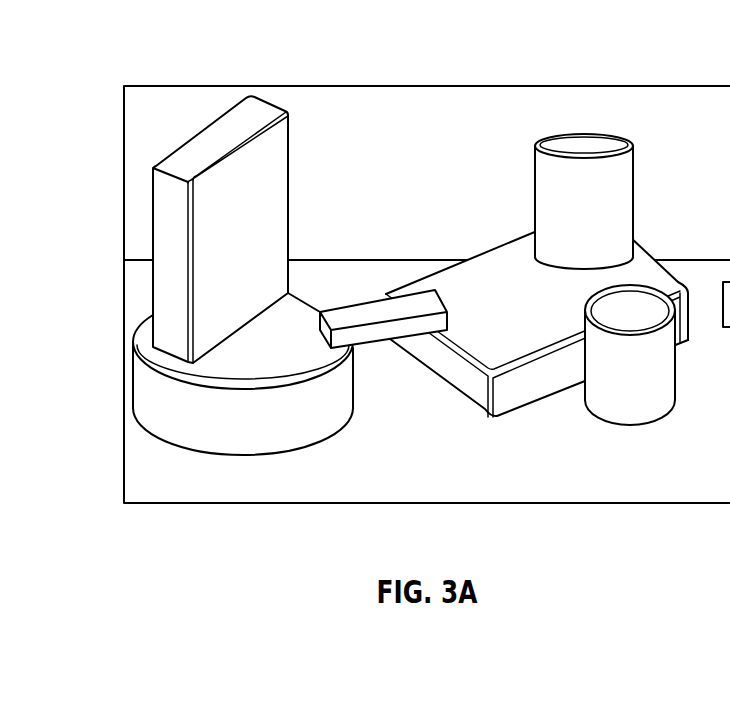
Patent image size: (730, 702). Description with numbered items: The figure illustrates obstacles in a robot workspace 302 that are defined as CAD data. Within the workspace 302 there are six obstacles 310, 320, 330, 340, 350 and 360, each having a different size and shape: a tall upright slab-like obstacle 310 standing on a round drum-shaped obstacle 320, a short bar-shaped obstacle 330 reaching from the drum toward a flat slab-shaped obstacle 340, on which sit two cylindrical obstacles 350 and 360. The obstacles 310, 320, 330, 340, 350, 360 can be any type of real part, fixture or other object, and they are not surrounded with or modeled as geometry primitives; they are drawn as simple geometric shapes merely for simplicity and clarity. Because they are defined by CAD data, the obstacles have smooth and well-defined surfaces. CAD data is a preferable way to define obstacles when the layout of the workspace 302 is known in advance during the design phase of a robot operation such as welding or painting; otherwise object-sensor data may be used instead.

The robot workspace 302 is at (560, 78).
The obstacle 310 is at (257, 110).
The obstacle 320 is at (313, 424).
The obstacle 330 is at (365, 312).
The obstacle 340 is at (503, 403).
The obstacle 350 is at (638, 408).
The obstacle 360 is at (633, 178).